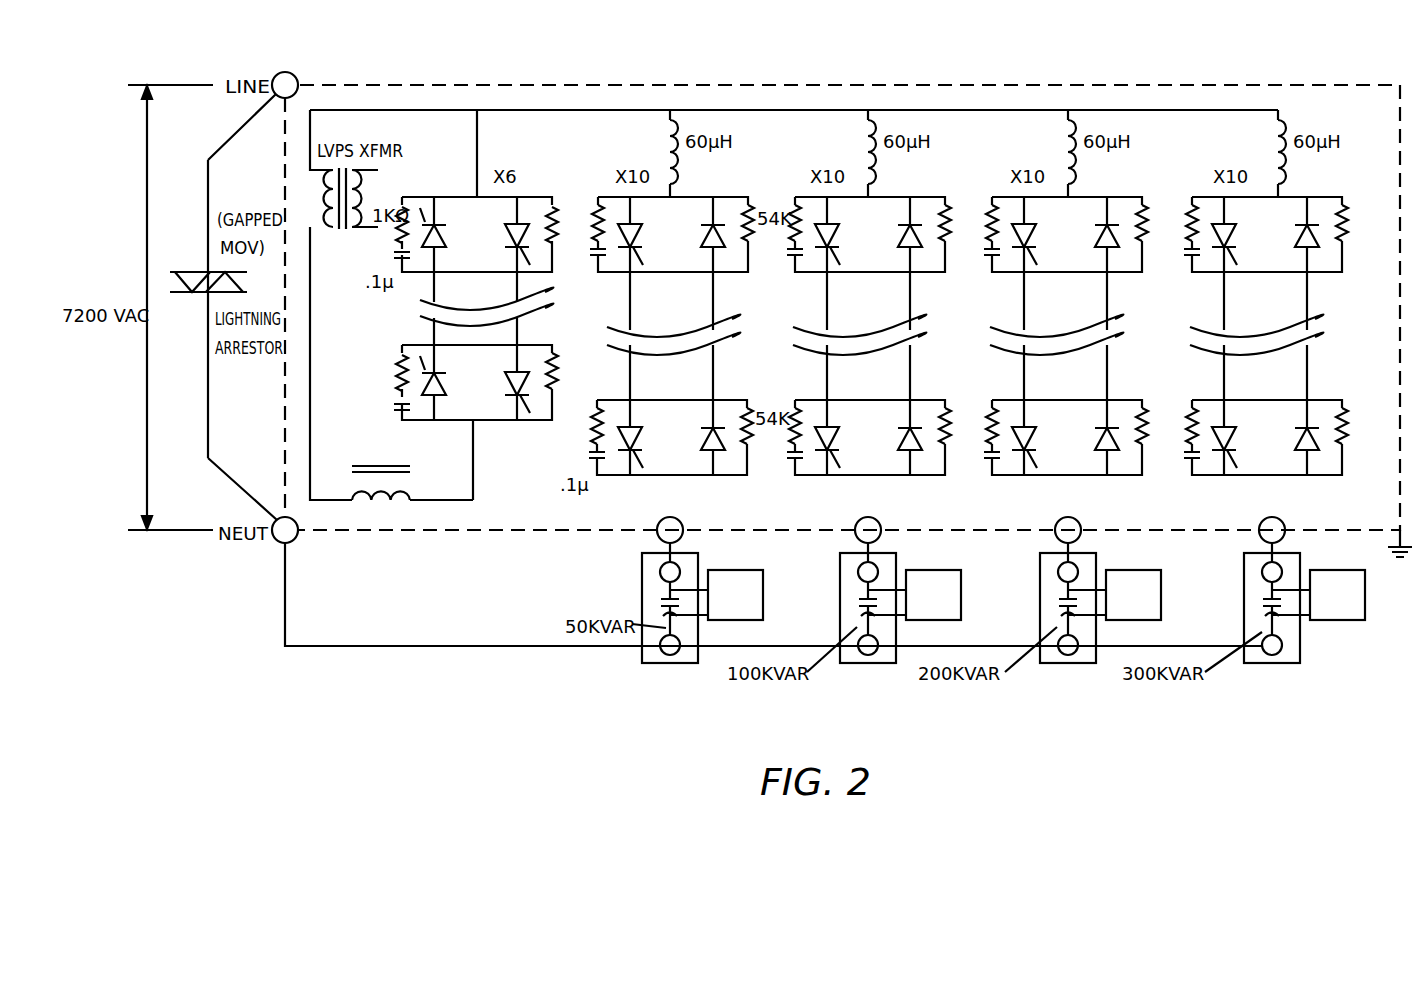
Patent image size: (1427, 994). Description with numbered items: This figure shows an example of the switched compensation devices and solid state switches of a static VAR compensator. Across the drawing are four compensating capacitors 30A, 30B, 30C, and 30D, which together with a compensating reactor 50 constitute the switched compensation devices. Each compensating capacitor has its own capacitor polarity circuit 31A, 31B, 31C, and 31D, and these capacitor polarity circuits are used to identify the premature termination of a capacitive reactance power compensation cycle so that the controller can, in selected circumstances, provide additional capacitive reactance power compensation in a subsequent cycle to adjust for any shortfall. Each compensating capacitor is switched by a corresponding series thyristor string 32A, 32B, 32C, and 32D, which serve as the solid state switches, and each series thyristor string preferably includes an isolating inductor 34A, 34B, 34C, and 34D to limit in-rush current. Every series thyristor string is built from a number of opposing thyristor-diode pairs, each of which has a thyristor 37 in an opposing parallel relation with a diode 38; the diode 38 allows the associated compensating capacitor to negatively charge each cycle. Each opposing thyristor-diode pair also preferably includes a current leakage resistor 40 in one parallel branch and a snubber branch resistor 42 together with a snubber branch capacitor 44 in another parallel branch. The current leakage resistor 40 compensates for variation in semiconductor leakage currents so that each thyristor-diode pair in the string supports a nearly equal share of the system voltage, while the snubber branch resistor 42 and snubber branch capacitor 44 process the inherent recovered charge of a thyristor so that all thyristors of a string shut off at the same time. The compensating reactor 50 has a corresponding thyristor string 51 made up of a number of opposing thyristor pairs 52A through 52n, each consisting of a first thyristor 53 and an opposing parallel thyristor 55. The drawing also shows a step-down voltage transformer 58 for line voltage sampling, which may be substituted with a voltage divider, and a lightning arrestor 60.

The compensating capacitor 30A is at (641, 575).
The compensating capacitor 30B is at (840, 565).
The compensating capacitor 30C is at (1040, 565).
The compensating capacitor 30D is at (1244, 565).
The capacitor polarity circuit 31A is at (763, 619).
The capacitor polarity circuit 31B is at (961, 619).
The capacitor polarity circuit 31C is at (1161, 619).
The capacitor polarity circuit 31D is at (1332, 621).
The series thyristor string 32A is at (698, 233).
The series thyristor string 32B is at (895, 233).
The series thyristor string 32C is at (1093, 233).
The series thyristor string 32D is at (1294, 234).
The isolating inductor 34A is at (667, 150).
The isolating inductor 34B is at (865, 150).
The isolating inductor 34C is at (1065, 150).
The isolating inductor 34D is at (1275, 150).
The thyristor 37 is at (640, 226).
The diode 38 is at (701, 246).
The current leakage resistor 40 is at (552, 353).
The snubber branch resistor 42 is at (398, 360).
The snubber branch capacitor 44 is at (395, 405).
The compensating reactor 50 is at (408, 483).
The thyristor string 51 is at (468, 321).
The opposing thyristor pair 52A is at (476, 217).
The opposing thyristor pair 52n is at (397, 336).
The first thyristor 53 is at (450, 247).
The opposing parallel thyristor 55 is at (495, 234).
The step-down voltage transformer 58 is at (347, 230).
The lightning arrestor 60 is at (197, 295).